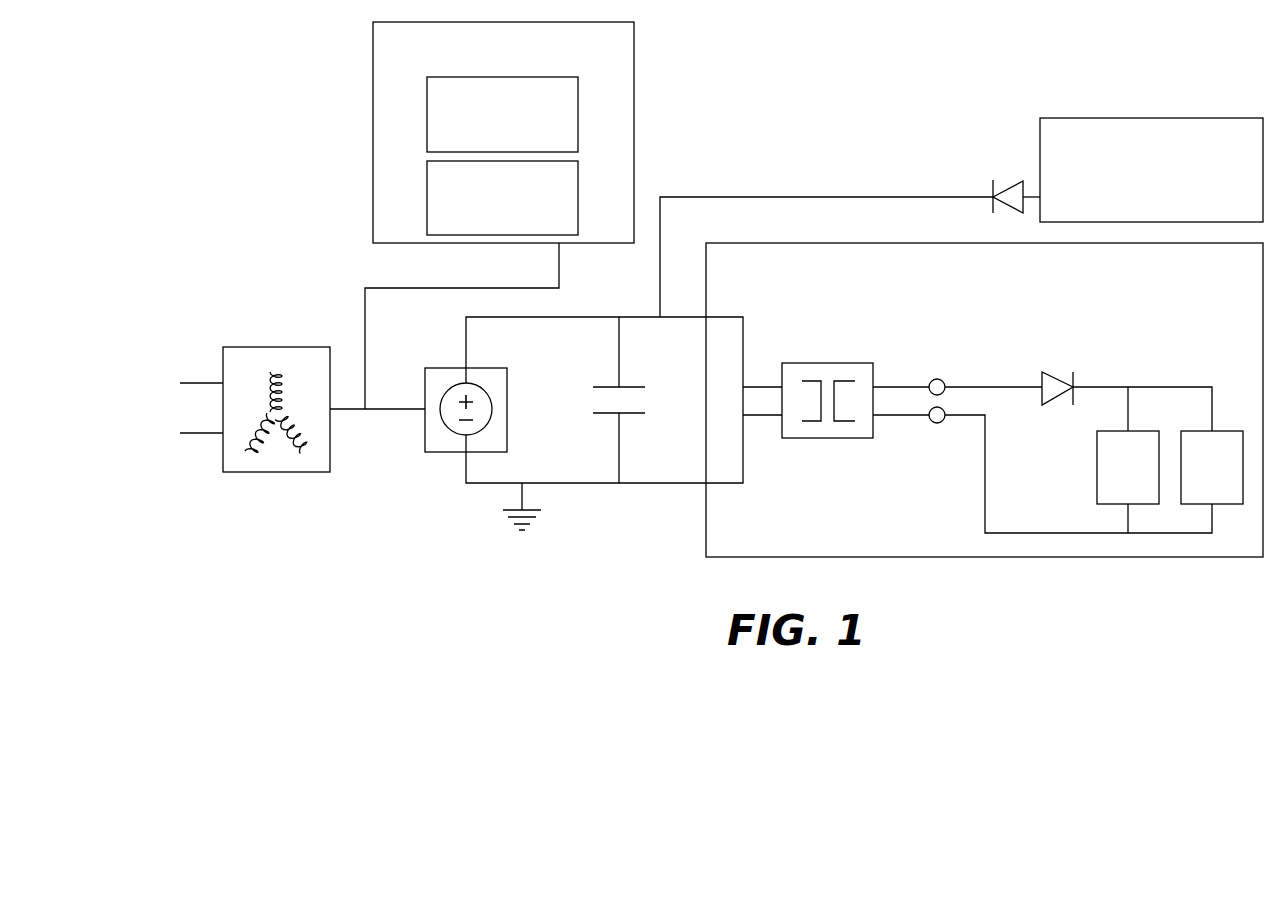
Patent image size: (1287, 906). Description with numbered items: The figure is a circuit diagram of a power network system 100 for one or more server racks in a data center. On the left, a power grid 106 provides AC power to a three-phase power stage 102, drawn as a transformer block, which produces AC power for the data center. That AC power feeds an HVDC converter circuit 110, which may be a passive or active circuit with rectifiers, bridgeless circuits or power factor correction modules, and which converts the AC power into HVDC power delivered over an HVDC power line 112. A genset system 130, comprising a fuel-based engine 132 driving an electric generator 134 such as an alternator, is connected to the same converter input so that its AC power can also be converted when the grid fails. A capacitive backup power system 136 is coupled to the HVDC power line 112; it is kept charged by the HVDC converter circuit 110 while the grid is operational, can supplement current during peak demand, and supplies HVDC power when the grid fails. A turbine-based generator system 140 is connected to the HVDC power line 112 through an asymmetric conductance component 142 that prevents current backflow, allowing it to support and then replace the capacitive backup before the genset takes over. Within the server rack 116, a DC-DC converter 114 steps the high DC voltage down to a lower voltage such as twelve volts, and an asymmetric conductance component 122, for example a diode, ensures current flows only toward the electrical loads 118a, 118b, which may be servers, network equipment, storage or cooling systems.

The power network system 100 is at (318, 248).
The three-phase power stage 102 is at (285, 473).
The power grid 106 is at (171, 404).
The HVDC converter circuit 110 is at (453, 453).
The HVDC power line 112 is at (604, 369).
The DC-DC converter 114 is at (822, 438).
The server rack 116 is at (984, 400).
The electrical load 118a is at (1128, 467).
The electrical load 118b is at (1212, 467).
The asymmetric conductance component 122 is at (1060, 375).
The genset system 130 is at (503, 132).
The fuel-based engine 132 is at (502, 114).
The electric generator 134 is at (502, 198).
The capacitive backup power system 136 is at (628, 413).
The turbine-based generator system 140 is at (1151, 170).
The asymmetric conductance component 142 is at (1015, 180).